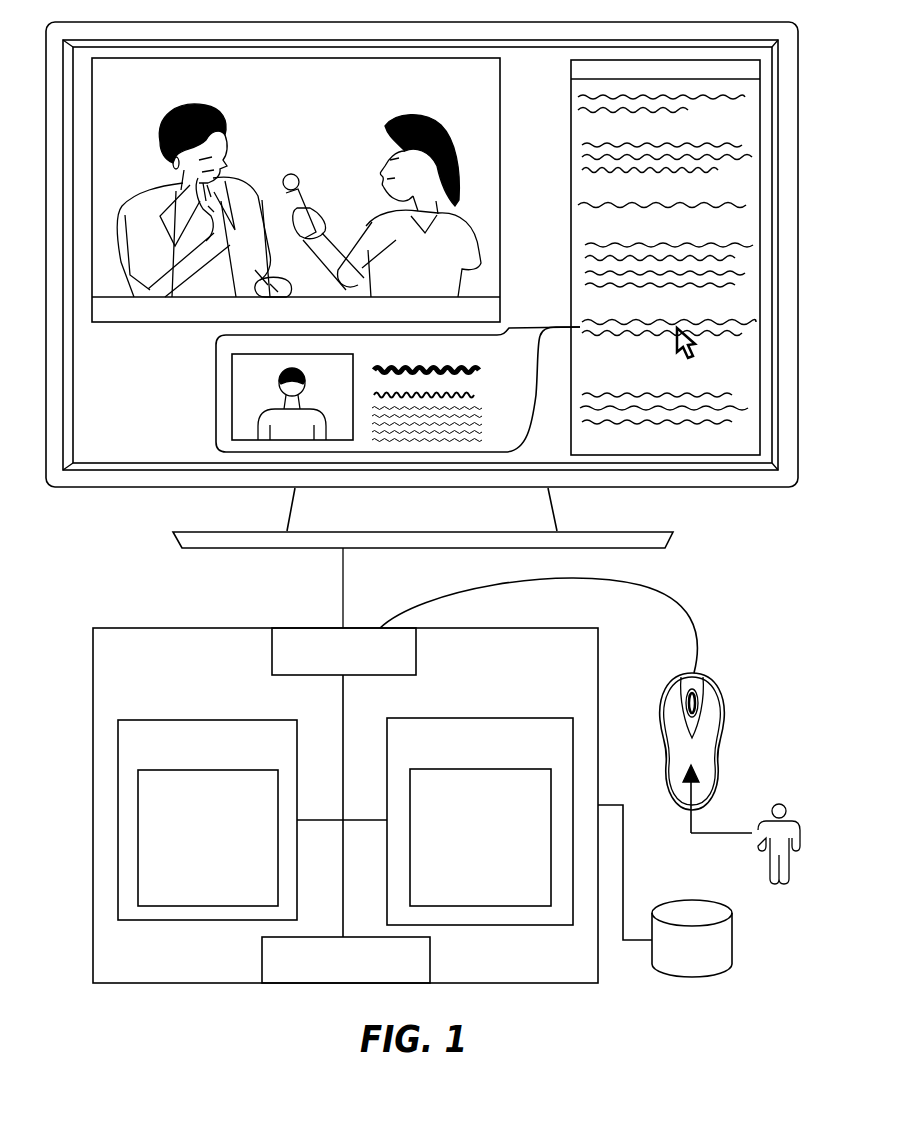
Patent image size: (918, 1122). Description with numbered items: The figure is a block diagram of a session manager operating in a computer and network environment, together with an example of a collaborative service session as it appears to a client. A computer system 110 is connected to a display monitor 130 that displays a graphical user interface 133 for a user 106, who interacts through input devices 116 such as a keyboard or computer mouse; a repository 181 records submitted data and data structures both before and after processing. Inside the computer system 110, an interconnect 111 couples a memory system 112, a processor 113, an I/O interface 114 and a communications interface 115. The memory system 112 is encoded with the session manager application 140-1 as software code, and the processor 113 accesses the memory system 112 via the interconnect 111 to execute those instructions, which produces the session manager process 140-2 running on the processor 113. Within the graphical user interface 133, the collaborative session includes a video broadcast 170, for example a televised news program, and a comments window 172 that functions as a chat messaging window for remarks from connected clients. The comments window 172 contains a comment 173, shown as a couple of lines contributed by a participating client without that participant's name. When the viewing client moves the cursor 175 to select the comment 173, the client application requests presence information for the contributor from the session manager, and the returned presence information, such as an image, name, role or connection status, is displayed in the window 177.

The user 106 is at (757, 845).
The computer system 110 is at (131, 653).
The interconnect 111 is at (343, 715).
The memory system 112 is at (194, 745).
The processor 113 is at (466, 741).
The I/O interface 114 is at (333, 650).
The communications interface 115 is at (332, 960).
The input devices 116 is at (660, 673).
The display monitor 130 is at (168, 488).
The graphical user interface 133 is at (158, 403).
The session manager application 140-1 is at (186, 790).
The session manager process 140-2 is at (458, 789).
The video broadcast 170 is at (500, 121).
The comments window 172 is at (571, 195).
The comment 173 is at (632, 350).
The cursor 175 is at (697, 349).
The window 177 is at (214, 393).
The repository 181 is at (678, 960).